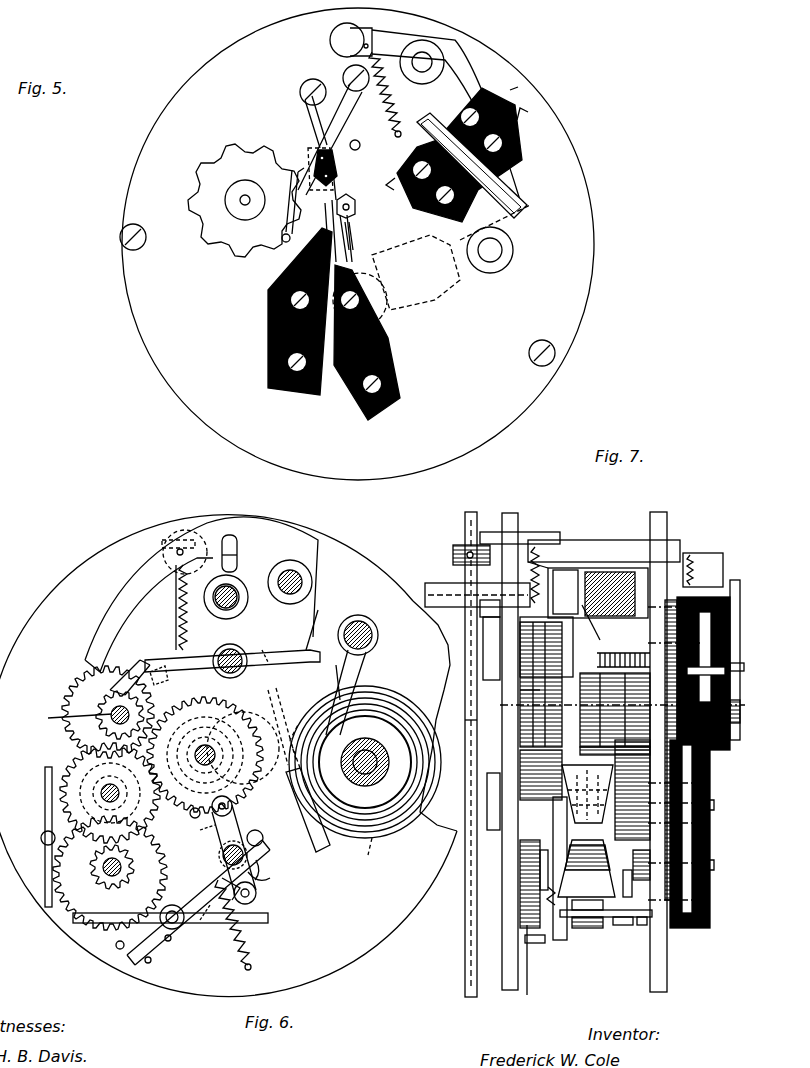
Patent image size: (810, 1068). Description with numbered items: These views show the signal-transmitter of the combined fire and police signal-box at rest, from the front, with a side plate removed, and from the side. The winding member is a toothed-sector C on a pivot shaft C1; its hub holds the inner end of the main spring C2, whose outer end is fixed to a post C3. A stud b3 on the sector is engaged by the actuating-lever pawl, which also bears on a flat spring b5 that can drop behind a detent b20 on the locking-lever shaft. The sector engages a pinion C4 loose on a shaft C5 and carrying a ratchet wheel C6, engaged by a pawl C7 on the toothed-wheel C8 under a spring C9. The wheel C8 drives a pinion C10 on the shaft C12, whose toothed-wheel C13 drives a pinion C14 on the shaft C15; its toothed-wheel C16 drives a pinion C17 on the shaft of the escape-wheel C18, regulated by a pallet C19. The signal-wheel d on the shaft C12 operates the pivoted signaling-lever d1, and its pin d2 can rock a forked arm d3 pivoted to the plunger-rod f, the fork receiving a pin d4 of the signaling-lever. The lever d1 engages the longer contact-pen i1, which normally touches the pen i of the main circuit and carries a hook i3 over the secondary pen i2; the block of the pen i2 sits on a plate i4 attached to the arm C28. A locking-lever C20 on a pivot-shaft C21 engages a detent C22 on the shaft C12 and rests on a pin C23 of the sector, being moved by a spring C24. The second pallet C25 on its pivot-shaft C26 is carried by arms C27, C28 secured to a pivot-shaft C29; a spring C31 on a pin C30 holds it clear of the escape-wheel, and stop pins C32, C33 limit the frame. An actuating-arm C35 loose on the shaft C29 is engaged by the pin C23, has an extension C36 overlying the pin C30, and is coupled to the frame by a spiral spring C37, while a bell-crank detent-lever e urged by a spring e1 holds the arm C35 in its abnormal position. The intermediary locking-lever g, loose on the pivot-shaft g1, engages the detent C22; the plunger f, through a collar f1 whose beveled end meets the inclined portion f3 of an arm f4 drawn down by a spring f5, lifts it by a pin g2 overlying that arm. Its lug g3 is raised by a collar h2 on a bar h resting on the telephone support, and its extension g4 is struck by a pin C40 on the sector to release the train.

In FIG. 5, the signal-wheel d is at (210, 232).
In FIG. 5, the signaling-lever d1 is at (312, 128).
In FIG. 7, the signaling-lever d1 is at (737, 585).
In FIG. 5, the pin d2 is at (282, 237).
In FIG. 7, the pin d2 is at (712, 742).
In FIG. 5, the arm d3 is at (286, 178).
In FIG. 7, the arm d3 is at (754, 705).
In FIG. 5, the pin d4 is at (336, 168).
In FIG. 7, the pin d4 is at (744, 667).
In FIG. 5, the plunger-rod f is at (345, 72).
In FIG. 6, the plunger-rod f is at (240, 585).
In FIG. 7, the plunger-rod f is at (440, 590).
In FIG. 7, the collar f1 is at (570, 580).
In FIG. 6, the inclined portion f3 is at (330, 852).
In FIG. 7, the inclined portion f3 is at (612, 568).
In FIG. 5, the arm f4 is at (417, 32).
In FIG. 7, the arm f4 is at (570, 540).
In FIG. 5, the spring f5 is at (386, 112).
In FIG. 7, the spring f5 is at (705, 565).
In FIG. 6, the intermediary locking-lever g is at (122, 596).
In FIG. 7, the intermediary locking-lever g is at (565, 592).
In FIG. 5, the pivot-shaft g1 is at (430, 62).
In FIG. 6, the pivot-shaft g1 is at (305, 580).
In FIG. 6, the pin g2 is at (238, 540).
In FIG. 7, the pin g2 is at (540, 530).
In FIG. 6, the lug g3 is at (175, 535).
In FIG. 7, the lug g3 is at (500, 530).
In FIG. 6, the extension g4 is at (312, 620).
In FIG. 5, the contact-pen i is at (325, 224).
In FIG. 5, the contact-pen i1 is at (340, 185).
In FIG. 5, the contact-pen i2 is at (352, 238).
In FIG. 5, the hook i3 is at (353, 208).
In FIG. 6, the plate i4 is at (234, 840).
In FIG. 6, the detent-lever e is at (182, 620).
In FIG. 7, the detent-lever e is at (520, 640).
In FIG. 6, the spring e1 is at (180, 600).
In FIG. 7, the spring e1 is at (540, 566).
In FIG. 7, the bar h is at (465, 527).
In FIG. 7, the collar h2 is at (453, 553).
In FIG. 7, the stud b3 is at (470, 735).
In FIG. 7, the flat spring b5 is at (487, 810).
In FIG. 7, the detent b20 is at (483, 625).
In FIG. 6, the toothed-sector C is at (350, 672).
In FIG. 5, the pivot shaft C1 is at (502, 250).
In FIG. 6, the pivot shaft C1 is at (372, 770).
In FIG. 6, the main spring C2 is at (370, 840).
In FIG. 7, the main spring C2 is at (660, 560).
In FIG. 6, the post C3 is at (376, 645).
In FIG. 6, the pinion C4 is at (200, 712).
In FIG. 6, the shaft C5 is at (205, 755).
In FIG. 6, the ratchet wheel C6 is at (232, 720).
In FIG. 6, the pawl C7 is at (198, 832).
In FIG. 7, the pawl C7 is at (553, 868).
In FIG. 6, the toothed-wheel C8 is at (268, 825).
In FIG. 7, the toothed-wheel C8 is at (615, 709).
In FIG. 6, the spring C9 is at (182, 812).
In FIG. 6, the pinion C10 is at (104, 730).
In FIG. 7, the pinion C10 is at (615, 723).
In FIG. 6, the shaft C12 is at (61, 716).
In FIG. 6, the toothed-wheel C13 is at (75, 702).
In FIG. 7, the toothed-wheel C13 is at (483, 720).
In FIG. 6, the pinion C14 is at (90, 795).
In FIG. 6, the shaft C15 is at (118, 800).
In FIG. 6, the toothed-wheel C16 is at (75, 775).
In FIG. 7, the toothed-wheel C16 is at (640, 808).
In FIG. 6, the pinion C17 is at (117, 877).
In FIG. 6, the escape-wheel C18 is at (80, 895).
In FIG. 7, the escape-wheel C18 is at (525, 893).
In FIG. 6, the pallet C19 is at (45, 848).
In FIG. 7, the pallet C19 is at (520, 850).
In FIG. 6, the locking-lever C20 is at (166, 668).
In FIG. 7, the locking-lever C20 is at (568, 650).
In FIG. 5, the pivot-shaft C21 is at (361, 145).
In FIG. 6, the pivot-shaft C21 is at (272, 640).
In FIG. 7, the pivot-shaft C21 is at (583, 611).
In FIG. 6, the detent C22 is at (140, 662).
In FIG. 7, the detent C22 is at (520, 692).
In FIG. 6, the pin C23 is at (288, 726).
In FIG. 6, the spring C24 is at (225, 648).
In FIG. 6, the second pallet C25 is at (205, 866).
In FIG. 6, the pivot C26 is at (158, 928).
In FIG. 7, the pivot C26 is at (620, 925).
In FIG. 6, the arm C27 is at (168, 941).
In FIG. 7, the arm C27 is at (527, 995).
In FIG. 6, the arm C28 is at (200, 920).
In FIG. 7, the arm C28 is at (645, 925).
In FIG. 6, the pivot-shaft C29 is at (258, 893).
In FIG. 6, the pin C30 is at (240, 902).
In FIG. 6, the spring C31 is at (240, 948).
In FIG. 7, the spring C31 is at (555, 920).
In FIG. 6, the stop pin C32 is at (118, 948).
In FIG. 7, the stop pin C32 is at (525, 939).
In FIG. 6, the stop pin C33 is at (147, 963).
In FIG. 7, the stop pin C33 is at (540, 955).
In FIG. 6, the actuating-arm C35 is at (262, 870).
In FIG. 7, the actuating-arm C35 is at (540, 870).
In FIG. 6, the extension C36 is at (222, 856).
In FIG. 7, the extension C36 is at (586, 868).
In FIG. 6, the spiral spring C37 is at (270, 878).
In FIG. 6, the pin C40 is at (360, 622).